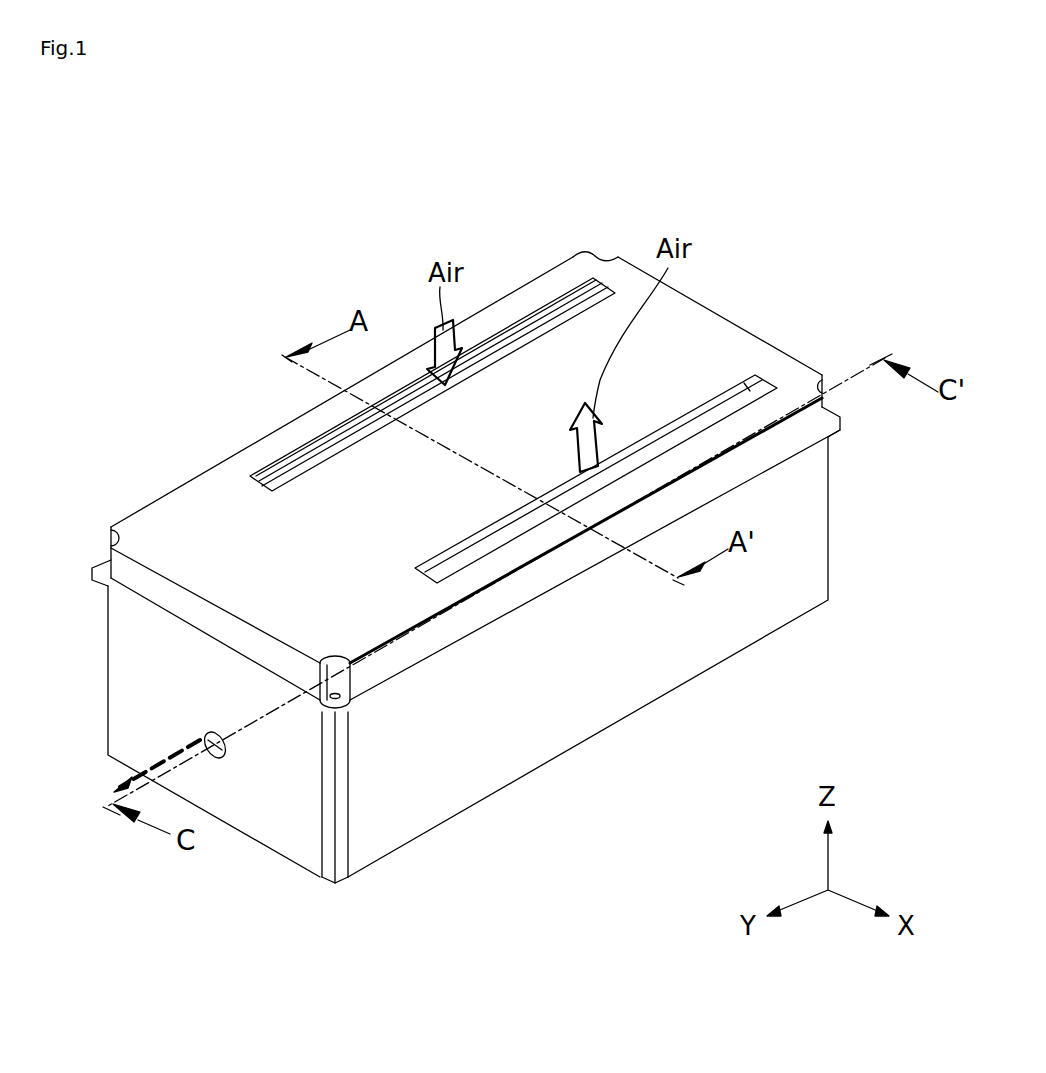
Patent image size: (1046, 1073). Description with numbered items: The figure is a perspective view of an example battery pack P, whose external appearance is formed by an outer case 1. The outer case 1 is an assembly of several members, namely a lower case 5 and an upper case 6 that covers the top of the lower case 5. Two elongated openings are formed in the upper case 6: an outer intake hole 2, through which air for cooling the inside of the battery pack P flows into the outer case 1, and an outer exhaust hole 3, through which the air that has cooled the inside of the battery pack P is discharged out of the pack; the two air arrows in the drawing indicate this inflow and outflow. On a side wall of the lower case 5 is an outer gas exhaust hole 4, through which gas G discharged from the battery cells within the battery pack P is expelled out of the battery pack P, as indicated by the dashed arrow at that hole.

The outer case 1 is at (905, 417).
The outer intake hole 2 is at (296, 456).
The outer exhaust hole 3 is at (718, 392).
The outer gas exhaust hole 4 is at (213, 762).
The lower case 5 is at (817, 472).
The upper case 6 is at (825, 403).
The battery pack P is at (601, 190).
The gas G is at (165, 755).